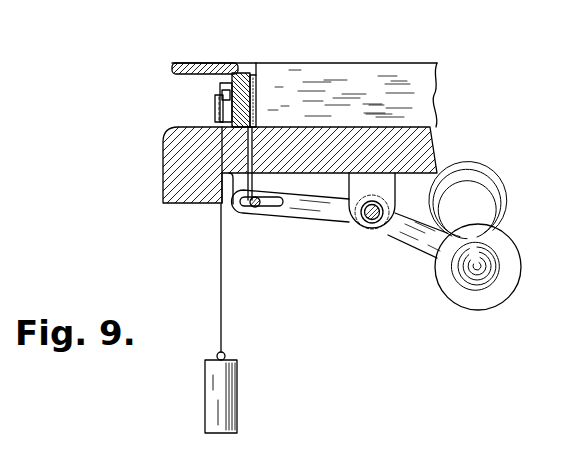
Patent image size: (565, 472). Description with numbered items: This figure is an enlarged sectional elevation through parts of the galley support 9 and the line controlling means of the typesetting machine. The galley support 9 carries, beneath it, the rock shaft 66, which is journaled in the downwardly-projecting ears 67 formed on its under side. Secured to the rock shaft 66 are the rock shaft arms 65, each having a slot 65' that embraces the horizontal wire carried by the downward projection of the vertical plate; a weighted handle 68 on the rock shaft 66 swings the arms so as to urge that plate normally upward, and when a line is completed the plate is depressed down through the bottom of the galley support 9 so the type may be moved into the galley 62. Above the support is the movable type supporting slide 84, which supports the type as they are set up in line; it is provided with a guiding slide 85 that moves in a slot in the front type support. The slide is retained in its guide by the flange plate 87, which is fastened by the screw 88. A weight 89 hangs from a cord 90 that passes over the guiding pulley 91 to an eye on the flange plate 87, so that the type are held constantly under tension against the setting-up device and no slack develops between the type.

The type galley support 9 is at (432, 146).
The galley 62 is at (372, 77).
The movable type supporting slide 84 is at (246, 73).
The guiding slide 85 is at (244, 75).
The screw 88 is at (256, 88).
The flange plate 87 is at (227, 89).
The guiding pulley 91 is at (218, 110).
The rock shaft arms 65 is at (290, 230).
The slot 65' is at (266, 223).
The downwardly-projecting ears 67 is at (392, 190).
The rock shaft 66 is at (366, 218).
The weighted handle 68 is at (469, 232).
The cord 90 is at (218, 290).
The weight 89 is at (213, 383).